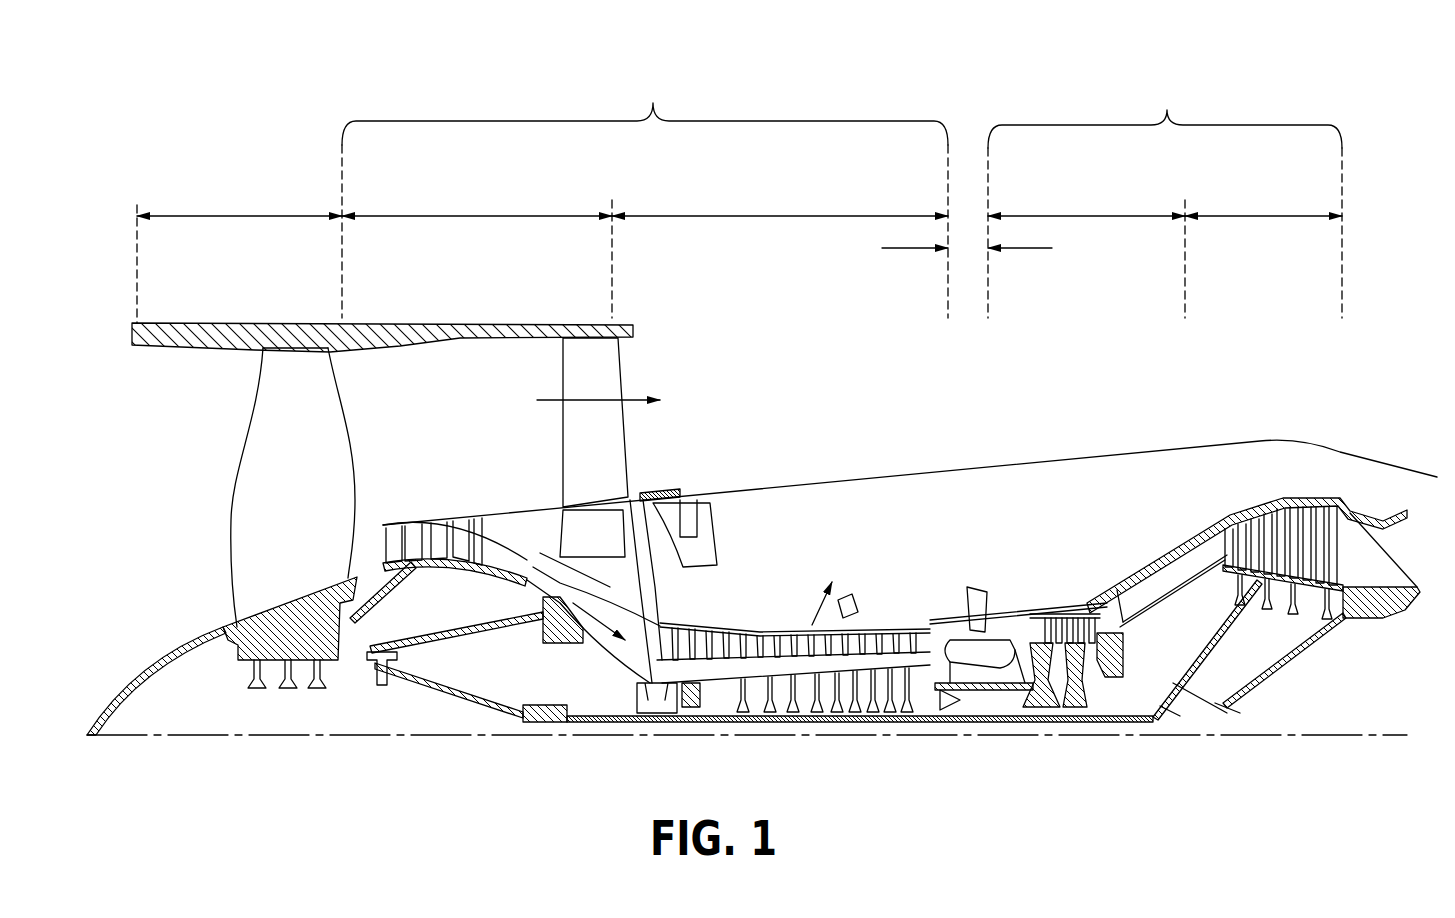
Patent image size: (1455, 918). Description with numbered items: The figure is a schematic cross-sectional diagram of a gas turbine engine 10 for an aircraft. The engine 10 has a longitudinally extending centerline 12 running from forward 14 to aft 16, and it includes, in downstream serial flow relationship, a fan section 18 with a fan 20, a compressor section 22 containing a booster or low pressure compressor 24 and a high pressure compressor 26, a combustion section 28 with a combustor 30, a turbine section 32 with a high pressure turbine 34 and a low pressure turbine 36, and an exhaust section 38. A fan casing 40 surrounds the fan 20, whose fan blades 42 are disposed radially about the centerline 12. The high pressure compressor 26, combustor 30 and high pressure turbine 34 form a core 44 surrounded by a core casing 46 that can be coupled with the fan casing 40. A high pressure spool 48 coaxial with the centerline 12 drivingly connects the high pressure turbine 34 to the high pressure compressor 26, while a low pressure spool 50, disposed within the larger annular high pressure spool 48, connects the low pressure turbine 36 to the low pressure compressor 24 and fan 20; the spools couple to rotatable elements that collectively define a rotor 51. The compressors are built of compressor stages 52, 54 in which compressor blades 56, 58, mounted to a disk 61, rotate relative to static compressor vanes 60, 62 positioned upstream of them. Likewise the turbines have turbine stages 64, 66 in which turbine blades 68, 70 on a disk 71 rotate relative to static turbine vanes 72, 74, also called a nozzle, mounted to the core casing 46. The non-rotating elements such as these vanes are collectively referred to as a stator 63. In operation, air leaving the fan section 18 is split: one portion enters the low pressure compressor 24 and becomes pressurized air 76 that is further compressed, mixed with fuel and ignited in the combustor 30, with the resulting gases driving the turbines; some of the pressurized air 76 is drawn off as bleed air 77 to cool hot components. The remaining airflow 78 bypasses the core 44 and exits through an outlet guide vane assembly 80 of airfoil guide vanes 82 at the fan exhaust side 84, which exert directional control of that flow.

The gas turbine engine 10 is at (1362, 246).
The centerline 12 is at (217, 738).
The forward 14 is at (133, 461).
The aft 16 is at (1413, 558).
The fan section 18 is at (240, 215).
The fan 20 is at (215, 580).
The compressor section 22 is at (653, 103).
The low pressure compressor 24 is at (477, 215).
The high pressure compressor 26 is at (778, 215).
The combustion section 28 is at (893, 250).
The combustor 30 is at (988, 592).
The turbine section 32 is at (1167, 110).
The high pressure turbine 34 is at (1088, 215).
The low pressure turbine 36 is at (1262, 215).
The exhaust section 38 is at (1409, 530).
The fan casing 40 is at (377, 323).
The fan blades 42 is at (314, 396).
The core 44 is at (912, 502).
The core casing 46 is at (1173, 547).
The high pressure spool 48 is at (950, 692).
The low pressure spool 50 is at (542, 720).
The rotor 51 is at (810, 725).
The compressor stages 52 is at (443, 498).
The compressor stages 54 is at (783, 613).
The compressor blades 56 is at (418, 531).
The compressor blades 58 is at (700, 633).
The static compressor vanes 60 is at (400, 528).
The disk 61 is at (437, 572).
The static compressor vanes 62 is at (680, 612).
The stator 63 is at (677, 700).
The turbine stages 64 is at (1045, 607).
The turbine stages 66 is at (1300, 485).
The turbine blades 68 is at (1048, 617).
The turbine blades 70 is at (1327, 500).
The disk 71 is at (1057, 675).
The static turbine vanes 72 is at (1032, 617).
The static turbine vanes 74 is at (1313, 503).
The pressurized air 76 is at (577, 643).
The bleed air 77 is at (803, 615).
The airflow 78 is at (553, 400).
The outlet guide vane assembly 80 is at (645, 458).
The airfoil guide vanes 82 is at (568, 434).
The fan exhaust side 84 is at (655, 368).